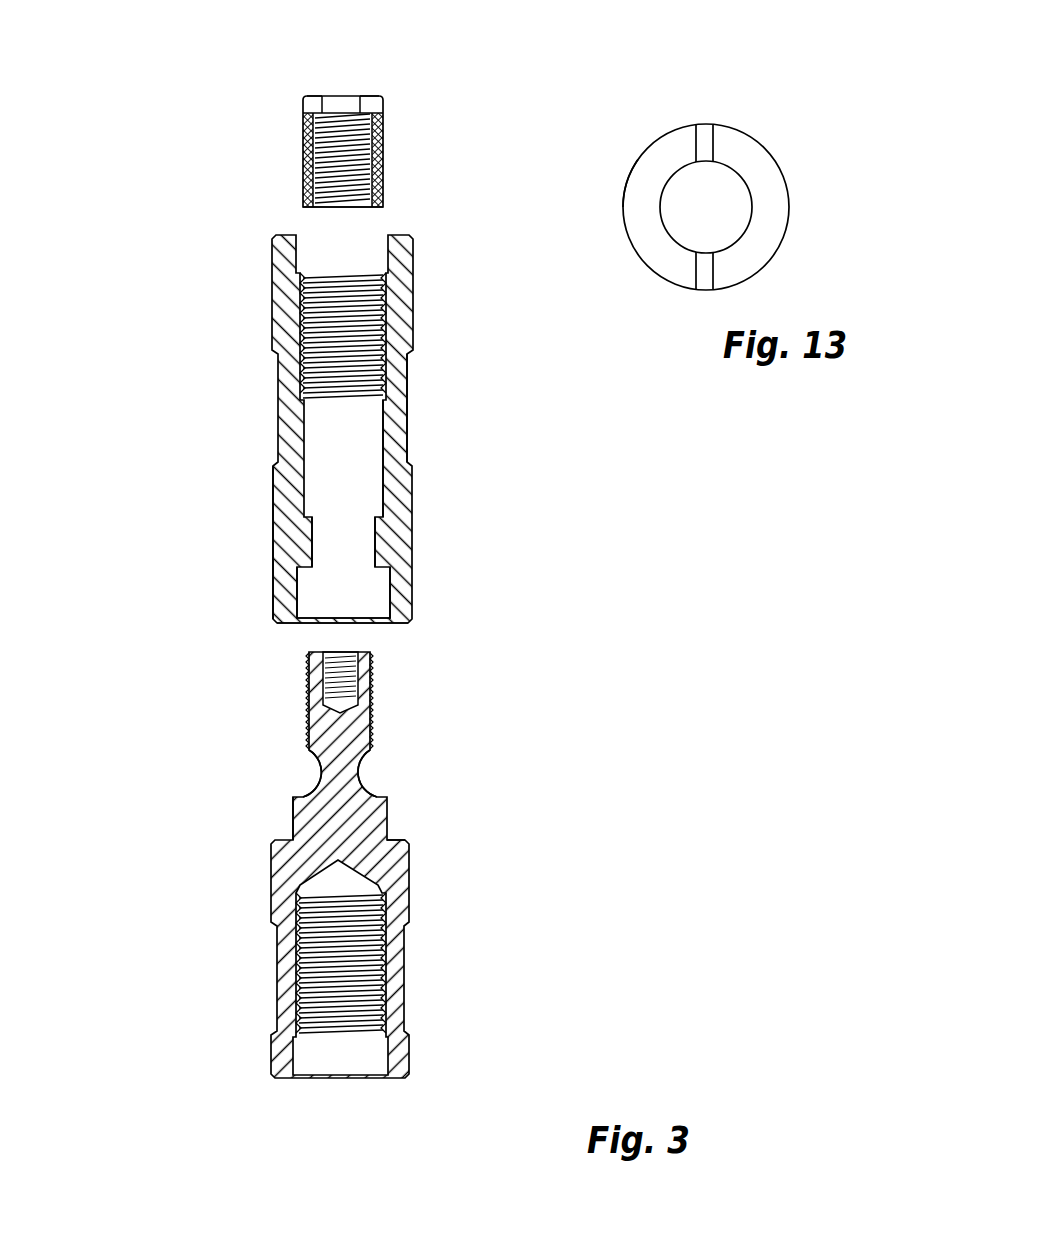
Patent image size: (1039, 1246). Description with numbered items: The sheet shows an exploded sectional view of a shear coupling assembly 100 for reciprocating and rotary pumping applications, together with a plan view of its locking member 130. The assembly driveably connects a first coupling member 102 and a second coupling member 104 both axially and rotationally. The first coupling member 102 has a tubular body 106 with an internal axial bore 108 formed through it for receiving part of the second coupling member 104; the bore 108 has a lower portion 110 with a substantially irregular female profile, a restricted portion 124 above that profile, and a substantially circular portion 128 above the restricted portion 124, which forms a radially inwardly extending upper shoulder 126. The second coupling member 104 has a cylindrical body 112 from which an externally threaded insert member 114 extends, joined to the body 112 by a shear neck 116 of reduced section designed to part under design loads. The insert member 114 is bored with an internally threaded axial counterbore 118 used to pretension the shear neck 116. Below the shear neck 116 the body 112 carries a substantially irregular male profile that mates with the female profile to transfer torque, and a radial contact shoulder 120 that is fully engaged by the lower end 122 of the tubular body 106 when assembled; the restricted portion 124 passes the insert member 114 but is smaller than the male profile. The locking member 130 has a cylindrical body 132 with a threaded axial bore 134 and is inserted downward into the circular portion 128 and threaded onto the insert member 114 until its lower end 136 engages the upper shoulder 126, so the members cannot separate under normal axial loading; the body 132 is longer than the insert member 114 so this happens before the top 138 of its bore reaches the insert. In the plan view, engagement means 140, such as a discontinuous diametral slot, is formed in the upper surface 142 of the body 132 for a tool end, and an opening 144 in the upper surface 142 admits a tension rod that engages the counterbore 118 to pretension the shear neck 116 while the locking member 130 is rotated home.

In FIG. 3, the shear coupling assembly 100 is at (164, 237).
In FIG. 3, the first coupling member 102 is at (542, 396).
In FIG. 3, the second coupling member 104 is at (502, 886).
In FIG. 3, the tubular body 106 is at (413, 474).
In FIG. 3, the internal axial bore 108 is at (380, 422).
In FIG. 3, the lower portion 110 is at (383, 598).
In FIG. 3, the cylindrical body 112 is at (272, 905).
In FIG. 3, the externally threaded insert member 114 is at (309, 698).
In FIG. 3, the shear neck 116 is at (370, 776).
In FIG. 3, the internally threaded axial counterbore 118 is at (360, 655).
In FIG. 3, the radial contact shoulder 120 is at (395, 840).
In FIG. 3, the lower end 122 is at (283, 622).
In FIG. 3, the restricted portion 124 is at (365, 540).
In FIG. 3, the upper shoulder 126 is at (306, 516).
In FIG. 3, the substantially circular portion 128 is at (380, 292).
In FIG. 3, the locking member 130 is at (492, 143).
In FIG. 13, the locking member 130 is at (762, 124).
In FIG. 3, the cylindrical body 132 is at (375, 160).
In FIG. 3, the threaded axial bore 134 is at (304, 158).
In FIG. 3, the lower end 136 is at (305, 207).
In FIG. 3, the top 138 is at (384, 118).
In FIG. 3, the engagement means 140 is at (303, 103).
In FIG. 13, the engagement means 140 is at (700, 168).
In FIG. 3, the upper surface 142 is at (313, 96).
In FIG. 13, the upper surface 142 is at (663, 197).
In FIG. 3, the opening 144 is at (360, 96).
In FIG. 13, the opening 144 is at (735, 230).